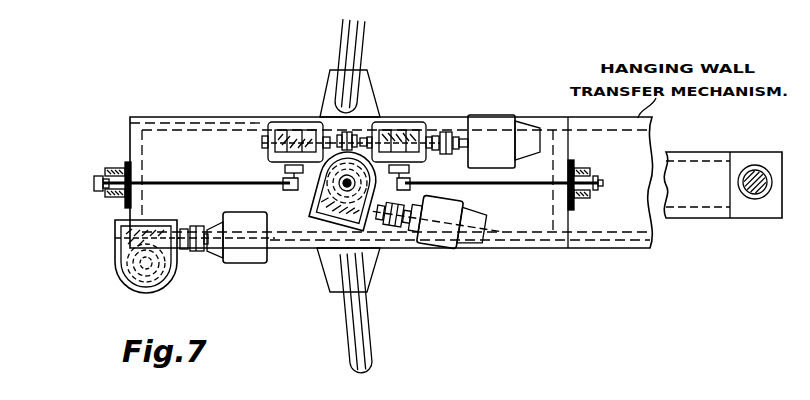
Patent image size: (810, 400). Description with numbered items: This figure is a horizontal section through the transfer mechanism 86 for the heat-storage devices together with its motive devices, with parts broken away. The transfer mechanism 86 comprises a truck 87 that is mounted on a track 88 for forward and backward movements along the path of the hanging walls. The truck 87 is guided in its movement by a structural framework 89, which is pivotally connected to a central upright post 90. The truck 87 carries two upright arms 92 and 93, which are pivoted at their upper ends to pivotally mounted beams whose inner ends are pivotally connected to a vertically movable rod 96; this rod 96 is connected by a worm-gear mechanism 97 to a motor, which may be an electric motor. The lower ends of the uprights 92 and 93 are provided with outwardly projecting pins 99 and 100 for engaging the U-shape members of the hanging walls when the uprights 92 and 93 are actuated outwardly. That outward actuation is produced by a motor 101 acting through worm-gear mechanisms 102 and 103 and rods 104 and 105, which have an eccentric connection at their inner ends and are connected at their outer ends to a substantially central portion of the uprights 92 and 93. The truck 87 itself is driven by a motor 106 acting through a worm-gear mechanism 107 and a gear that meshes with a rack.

The transfer mechanism 86 is at (476, 301).
The truck 87 is at (540, 232).
The track 88 is at (364, 355).
The structural framework 89 is at (692, 200).
The central upright post 90 is at (758, 198).
The upright arm 92 is at (590, 171).
The upright arm 93 is at (108, 171).
The vertically movable rod 96 is at (331, 188).
The worm-gear mechanism 97 is at (336, 216).
The pin 99 is at (603, 183).
The pin 100 is at (95, 186).
The motor 101 is at (497, 125).
The worm-gear mechanism 102 is at (406, 134).
The worm-gear mechanism 103 is at (284, 134).
The rod 104 is at (510, 186).
The rod 105 is at (166, 183).
The motor 106 is at (244, 264).
The worm-gear mechanism 107 is at (146, 288).